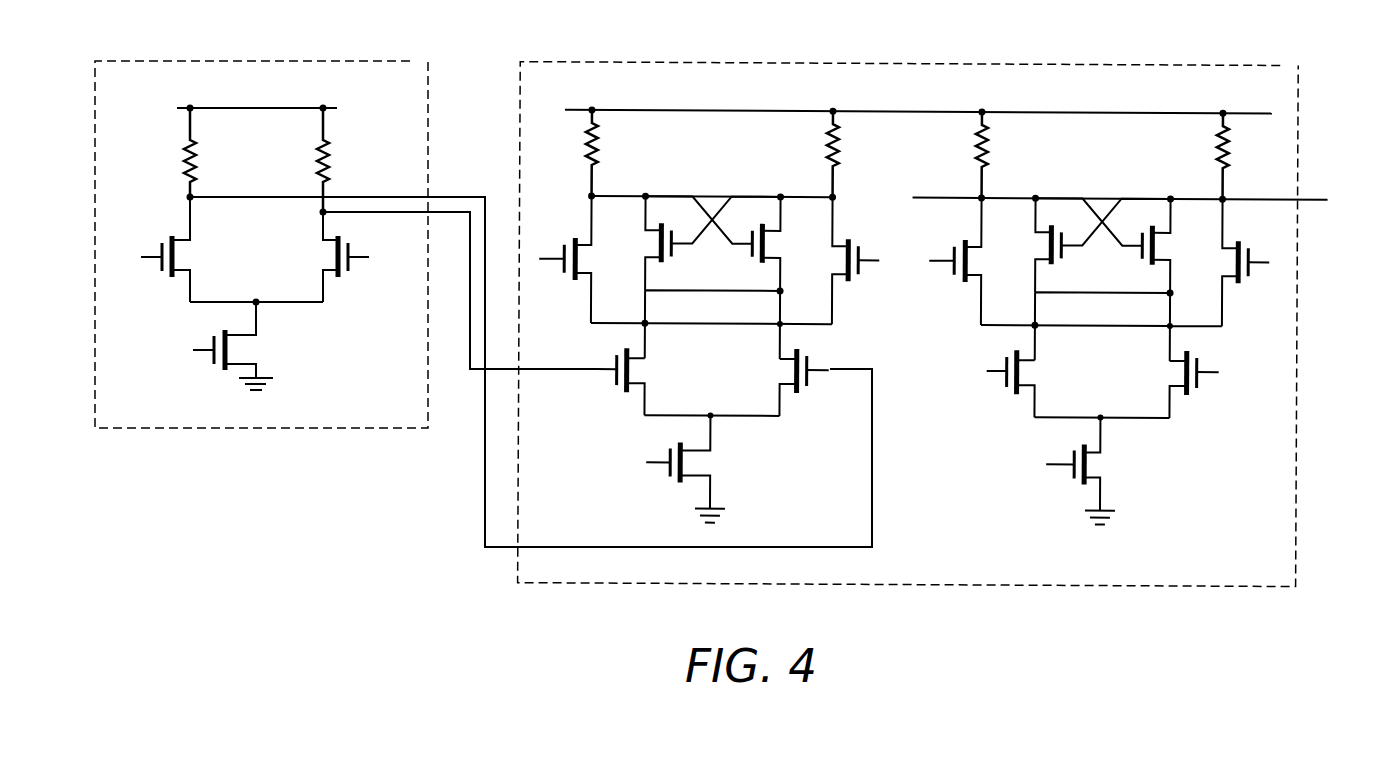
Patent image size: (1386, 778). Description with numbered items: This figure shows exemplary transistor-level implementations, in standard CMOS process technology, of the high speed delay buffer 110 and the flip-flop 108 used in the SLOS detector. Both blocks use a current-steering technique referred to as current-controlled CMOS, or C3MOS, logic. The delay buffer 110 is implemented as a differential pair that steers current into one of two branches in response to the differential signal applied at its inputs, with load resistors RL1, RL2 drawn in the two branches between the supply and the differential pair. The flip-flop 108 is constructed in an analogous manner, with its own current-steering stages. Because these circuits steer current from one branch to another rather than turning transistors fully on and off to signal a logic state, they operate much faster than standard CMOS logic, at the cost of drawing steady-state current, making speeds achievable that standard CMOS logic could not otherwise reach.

The delay buffer 110 is at (412, 61).
The flip-flop 108 is at (1283, 62).
The load resistor RL1 is at (212, 152).
The load resistor RL2 is at (345, 160).